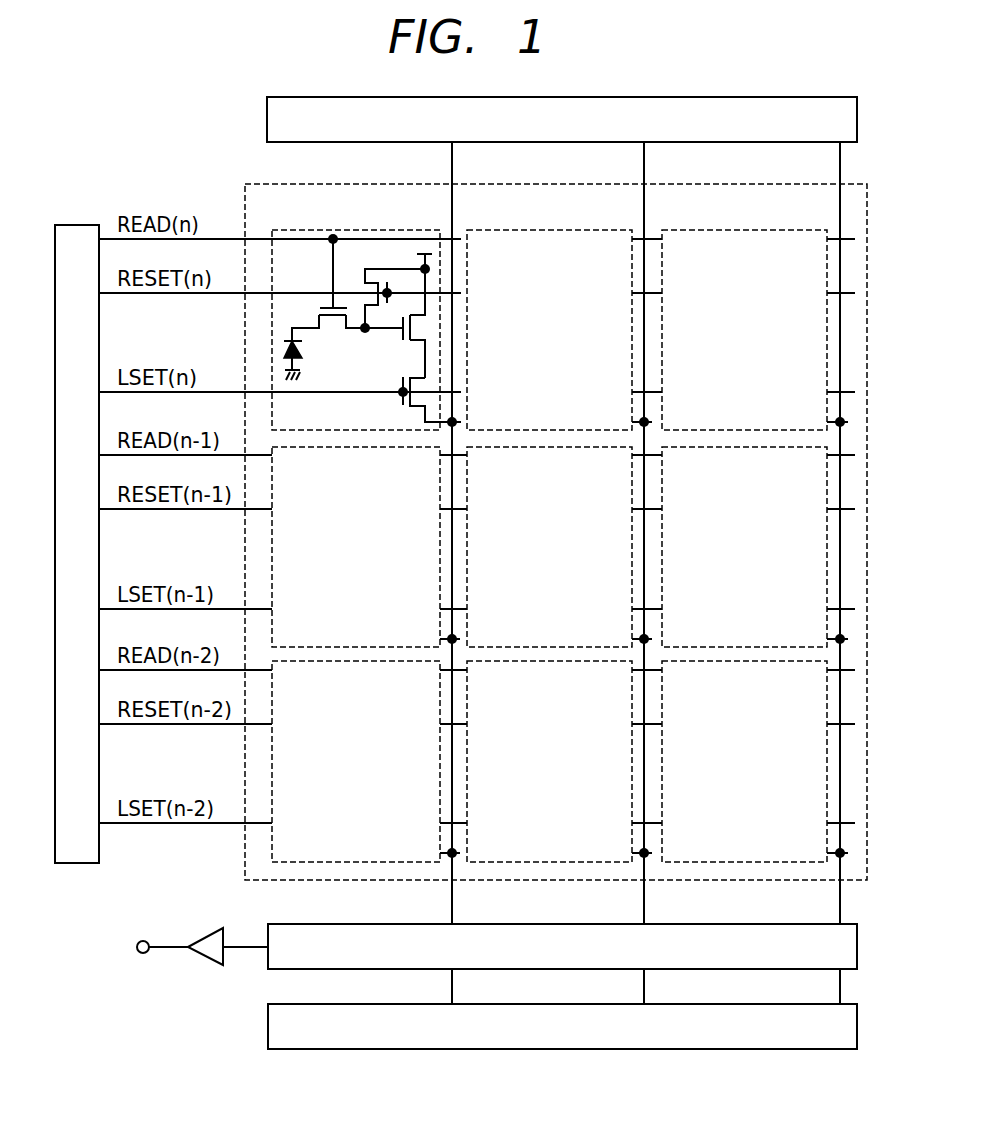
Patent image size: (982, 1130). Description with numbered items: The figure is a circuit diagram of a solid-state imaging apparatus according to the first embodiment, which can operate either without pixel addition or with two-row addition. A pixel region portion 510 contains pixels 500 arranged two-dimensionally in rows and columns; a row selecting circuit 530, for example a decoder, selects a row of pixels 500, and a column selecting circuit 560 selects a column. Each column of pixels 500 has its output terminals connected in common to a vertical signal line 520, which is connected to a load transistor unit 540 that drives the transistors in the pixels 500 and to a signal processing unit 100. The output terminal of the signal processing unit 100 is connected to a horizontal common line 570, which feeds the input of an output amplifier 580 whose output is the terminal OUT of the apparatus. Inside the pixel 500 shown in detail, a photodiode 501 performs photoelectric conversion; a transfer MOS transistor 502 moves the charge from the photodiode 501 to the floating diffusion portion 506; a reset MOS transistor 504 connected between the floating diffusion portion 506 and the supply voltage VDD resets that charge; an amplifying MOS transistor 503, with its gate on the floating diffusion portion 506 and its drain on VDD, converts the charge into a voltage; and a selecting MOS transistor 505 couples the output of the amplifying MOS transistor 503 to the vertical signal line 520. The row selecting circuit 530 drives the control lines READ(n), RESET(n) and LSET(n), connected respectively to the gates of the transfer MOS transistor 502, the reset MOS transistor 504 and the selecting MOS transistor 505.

The signal processing unit 100 is at (285, 925).
The pixel 500 is at (345, 230).
The photodiode 501 is at (302, 350).
The transfer MOS transistor 502 is at (314, 313).
The amplifying MOS transistor 503 is at (417, 328).
The reset MOS transistor 504 is at (368, 285).
The selecting MOS transistor 505 is at (407, 407).
The floating diffusion portion 506 is at (362, 334).
The pixel region portion 510 is at (245, 193).
The vertical signal line 520 is at (452, 905).
The row selecting circuit 530 is at (92, 225).
The load transistor unit 540 is at (267, 119).
The column selecting circuit 560 is at (268, 1033).
The horizontal common line 570 is at (247, 950).
The output amplifier 580 is at (198, 963).